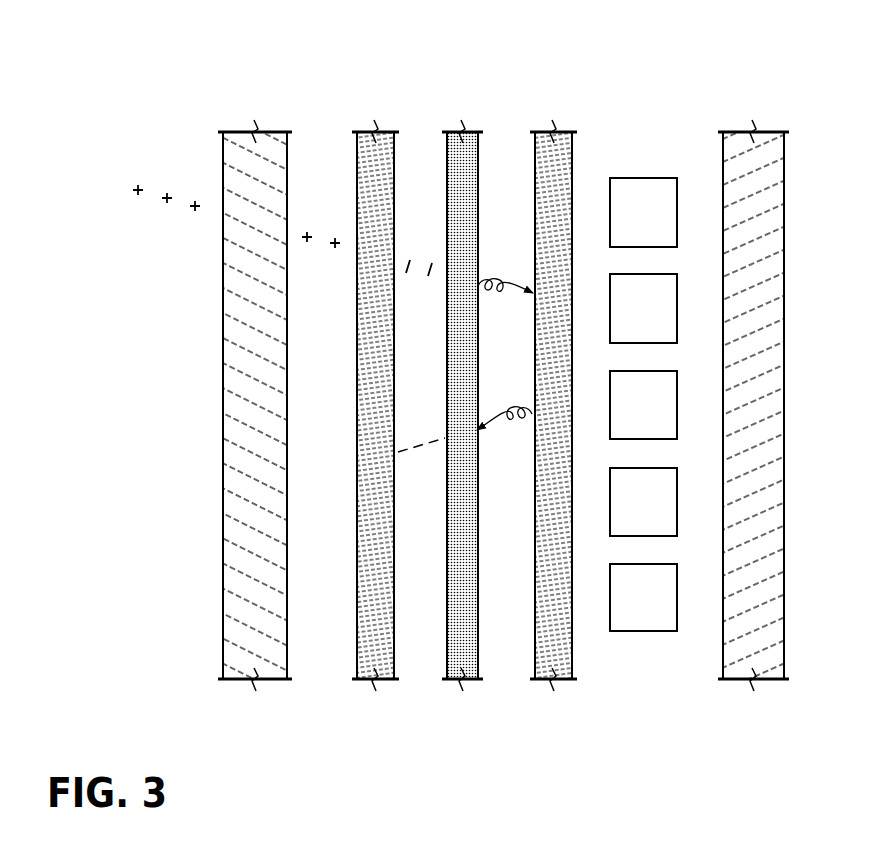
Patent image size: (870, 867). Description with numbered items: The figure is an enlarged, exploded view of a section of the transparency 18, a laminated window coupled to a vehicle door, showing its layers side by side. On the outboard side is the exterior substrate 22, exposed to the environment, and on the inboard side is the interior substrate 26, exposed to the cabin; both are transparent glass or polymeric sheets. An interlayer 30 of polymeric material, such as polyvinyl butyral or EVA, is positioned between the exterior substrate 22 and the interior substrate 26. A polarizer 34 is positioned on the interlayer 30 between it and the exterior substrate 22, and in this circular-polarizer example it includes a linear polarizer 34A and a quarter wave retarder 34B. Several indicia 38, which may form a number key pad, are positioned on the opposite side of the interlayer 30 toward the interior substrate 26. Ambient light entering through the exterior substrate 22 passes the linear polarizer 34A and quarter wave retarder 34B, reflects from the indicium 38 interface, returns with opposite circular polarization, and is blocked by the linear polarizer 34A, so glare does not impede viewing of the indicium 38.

The transparency 18 is at (653, 86).
The exterior substrate 22 is at (248, 588).
The interior substrate 26 is at (770, 428).
The interlayer 30 is at (563, 660).
The polarizer 34 is at (488, 97).
The linear polarizer 34A is at (382, 657).
The quarter wave retarder 34B is at (468, 657).
The indicium 38 is at (634, 224).